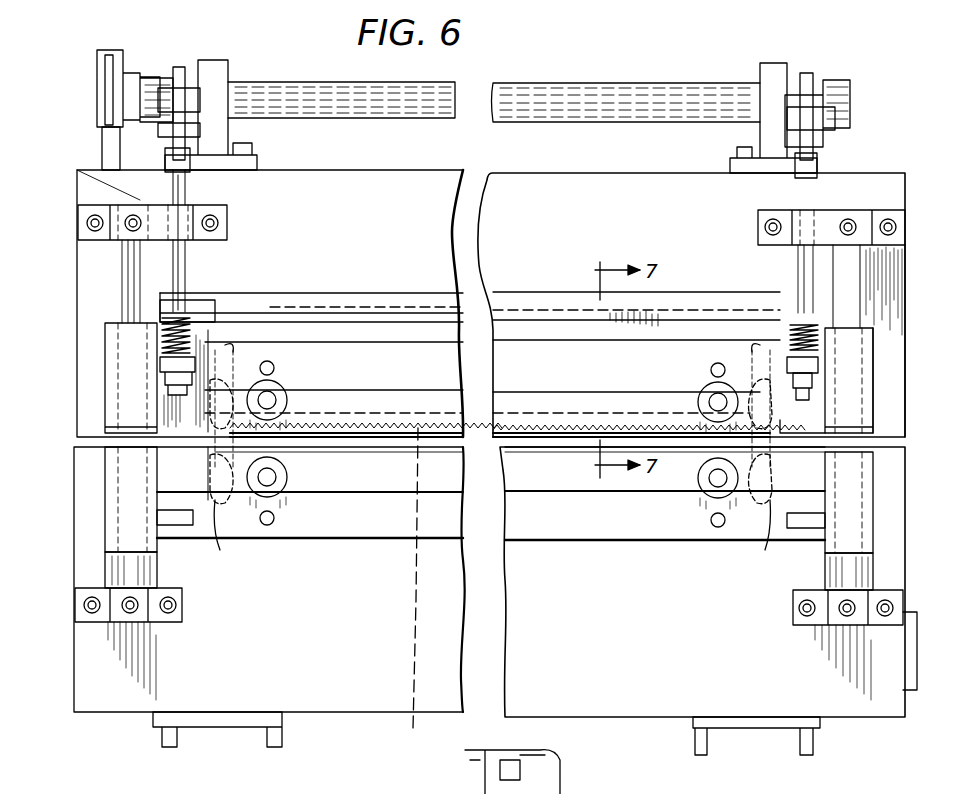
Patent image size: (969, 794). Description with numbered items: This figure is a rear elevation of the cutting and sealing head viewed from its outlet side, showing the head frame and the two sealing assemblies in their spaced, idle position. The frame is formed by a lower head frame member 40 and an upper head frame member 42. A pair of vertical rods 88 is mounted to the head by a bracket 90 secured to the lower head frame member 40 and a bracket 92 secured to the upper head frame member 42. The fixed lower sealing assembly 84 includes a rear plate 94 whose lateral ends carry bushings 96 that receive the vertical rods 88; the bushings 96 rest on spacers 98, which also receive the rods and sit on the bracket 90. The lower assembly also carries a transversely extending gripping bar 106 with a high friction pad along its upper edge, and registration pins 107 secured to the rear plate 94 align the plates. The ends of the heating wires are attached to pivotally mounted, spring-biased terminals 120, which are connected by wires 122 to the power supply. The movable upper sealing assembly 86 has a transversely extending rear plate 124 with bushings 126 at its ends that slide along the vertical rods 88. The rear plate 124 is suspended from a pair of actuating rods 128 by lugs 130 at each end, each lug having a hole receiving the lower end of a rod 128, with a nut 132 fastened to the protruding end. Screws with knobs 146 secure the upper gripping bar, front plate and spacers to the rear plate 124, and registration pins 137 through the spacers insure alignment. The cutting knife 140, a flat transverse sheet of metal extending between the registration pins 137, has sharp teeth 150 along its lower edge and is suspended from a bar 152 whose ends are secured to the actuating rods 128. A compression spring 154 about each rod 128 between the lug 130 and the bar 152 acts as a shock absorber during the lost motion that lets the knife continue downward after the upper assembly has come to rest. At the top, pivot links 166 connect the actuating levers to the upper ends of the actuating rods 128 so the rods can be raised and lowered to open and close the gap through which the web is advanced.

The lower head frame member 40 is at (370, 675).
The upper head frame member 42 is at (418, 210).
The lower sealing assembly 84 is at (639, 550).
The upper sealing assembly 86 is at (525, 255).
The vertical rods 88 is at (120, 363).
The bracket 90 is at (90, 595).
The bracket 92 is at (150, 213).
The rear plate 94 is at (800, 480).
The bushings 96 is at (107, 487).
The spacers 98 is at (115, 567).
The gripping bar 106 is at (535, 467).
The registration pins 107 is at (272, 525).
The terminals 120 is at (232, 490).
The wires 122 is at (215, 550).
The rear plate 124 is at (805, 418).
The bushings 126 is at (890, 380).
The actuating rods 128 is at (175, 255).
The lugs 130 is at (815, 365).
The nut 132 is at (813, 395).
The registration pins 137 is at (262, 360).
The cutting knife 140 is at (343, 330).
The knobs 146 is at (270, 385).
The teeth 150 is at (403, 591).
The bar 152 is at (270, 300).
The compression spring 154 is at (175, 340).
The pivot link 166 is at (150, 90).